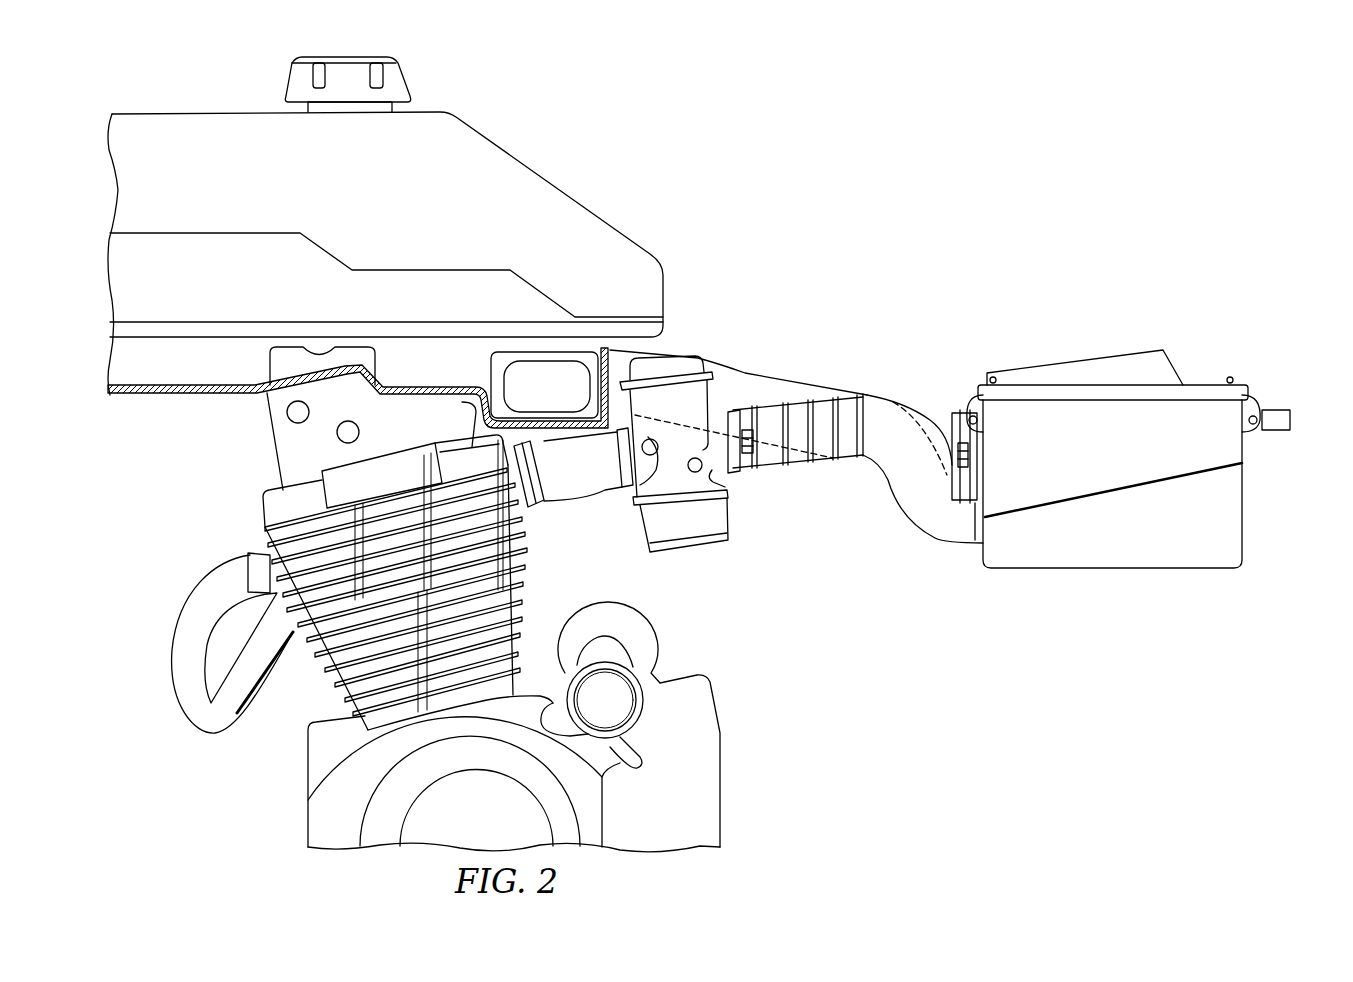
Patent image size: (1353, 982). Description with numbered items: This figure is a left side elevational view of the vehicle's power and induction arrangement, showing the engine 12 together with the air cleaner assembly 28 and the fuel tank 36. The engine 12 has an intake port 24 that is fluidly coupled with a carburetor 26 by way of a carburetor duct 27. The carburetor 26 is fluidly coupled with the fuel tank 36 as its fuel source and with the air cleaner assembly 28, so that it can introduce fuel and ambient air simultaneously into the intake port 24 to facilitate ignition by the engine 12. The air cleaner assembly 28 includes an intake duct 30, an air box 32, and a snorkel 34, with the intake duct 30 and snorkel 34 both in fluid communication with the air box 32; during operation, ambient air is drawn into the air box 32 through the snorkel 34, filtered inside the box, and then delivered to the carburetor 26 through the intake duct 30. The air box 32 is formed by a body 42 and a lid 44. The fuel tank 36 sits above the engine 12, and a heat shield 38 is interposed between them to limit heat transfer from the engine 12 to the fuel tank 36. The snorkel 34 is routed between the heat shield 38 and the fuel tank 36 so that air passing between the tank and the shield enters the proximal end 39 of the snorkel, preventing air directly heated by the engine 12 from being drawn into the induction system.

The engine 12 is at (292, 705).
The intake port 24 is at (530, 517).
The carburetor 26 is at (687, 560).
The carburetor duct 27 is at (589, 477).
The air cleaner assembly 28 is at (903, 287).
The intake duct 30 is at (775, 470).
The air box 32 is at (1128, 486).
The snorkel 34 is at (907, 520).
The fuel tank 36 is at (543, 180).
The heat shield 38 is at (158, 395).
The proximal end 39 is at (487, 366).
The body 42 is at (1095, 560).
The lid 44 is at (1173, 363).